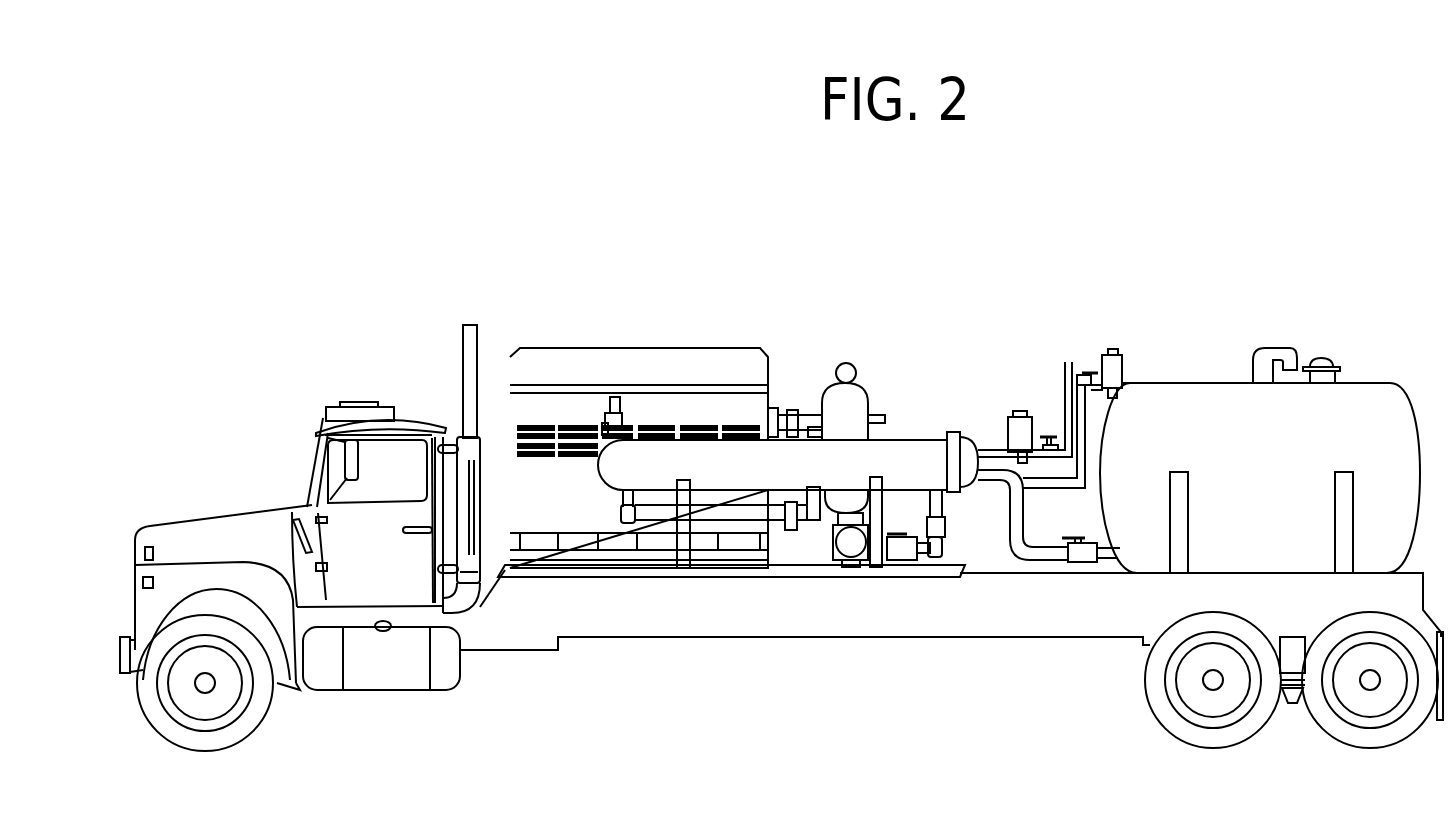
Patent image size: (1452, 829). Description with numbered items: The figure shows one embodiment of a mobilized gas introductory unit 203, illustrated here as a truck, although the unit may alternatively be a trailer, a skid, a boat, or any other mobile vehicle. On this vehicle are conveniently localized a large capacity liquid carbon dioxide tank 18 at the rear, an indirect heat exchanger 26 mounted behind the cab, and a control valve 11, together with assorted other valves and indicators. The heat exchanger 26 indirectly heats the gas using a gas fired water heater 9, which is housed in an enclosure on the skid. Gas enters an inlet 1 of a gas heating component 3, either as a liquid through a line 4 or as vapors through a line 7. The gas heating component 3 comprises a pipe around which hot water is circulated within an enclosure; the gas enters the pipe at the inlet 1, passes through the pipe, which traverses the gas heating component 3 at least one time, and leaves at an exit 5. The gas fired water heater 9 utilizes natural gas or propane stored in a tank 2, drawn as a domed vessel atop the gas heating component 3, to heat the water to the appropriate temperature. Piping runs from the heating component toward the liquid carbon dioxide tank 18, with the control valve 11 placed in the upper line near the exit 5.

The mobilized gas introductory unit 203 is at (430, 319).
The heat exchanger 26 is at (992, 275).
The gas fired water heater 9 is at (643, 348).
The gas heating component 3 is at (903, 437).
The tank 2 is at (858, 382).
The control valve 11 is at (1010, 414).
The exit 5 is at (1062, 364).
The line 7 is at (1085, 385).
The inlet 1 is at (985, 486).
The line 4 is at (1052, 561).
The tank 18 is at (1220, 383).